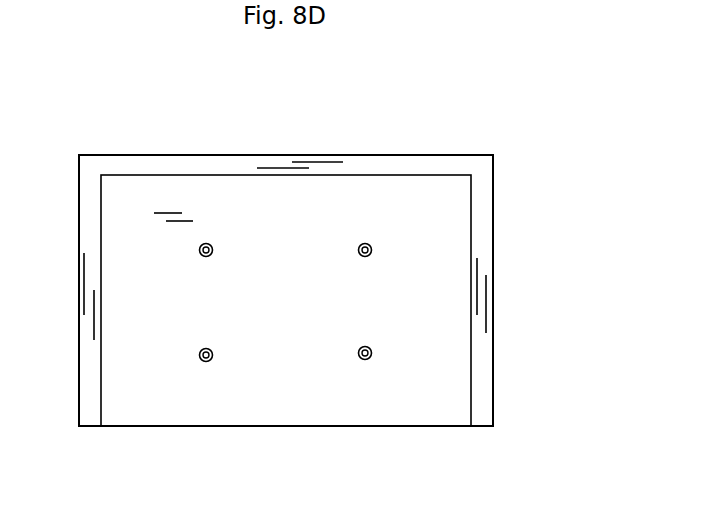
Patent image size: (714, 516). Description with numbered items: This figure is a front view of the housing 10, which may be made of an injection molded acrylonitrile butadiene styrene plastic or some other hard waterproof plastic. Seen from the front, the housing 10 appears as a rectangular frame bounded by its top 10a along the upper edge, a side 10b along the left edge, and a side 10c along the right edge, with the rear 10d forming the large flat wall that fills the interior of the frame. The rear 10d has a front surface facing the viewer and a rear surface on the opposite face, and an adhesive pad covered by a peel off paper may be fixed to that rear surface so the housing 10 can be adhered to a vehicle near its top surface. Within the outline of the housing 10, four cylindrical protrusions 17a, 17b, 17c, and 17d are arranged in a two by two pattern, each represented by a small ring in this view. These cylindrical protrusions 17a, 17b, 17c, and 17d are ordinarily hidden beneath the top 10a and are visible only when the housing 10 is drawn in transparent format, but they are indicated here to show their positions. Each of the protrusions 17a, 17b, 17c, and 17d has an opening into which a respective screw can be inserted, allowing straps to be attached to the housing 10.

The housing 10 is at (450, 138).
The top 10a is at (303, 162).
The side 10b is at (90, 380).
The side 10c is at (486, 392).
The rear 10d is at (280, 395).
The cylindrical protrusion 17a is at (199, 248).
The cylindrical protrusion 17b is at (361, 244).
The cylindrical protrusion 17c is at (203, 349).
The cylindrical protrusion 17d is at (361, 347).